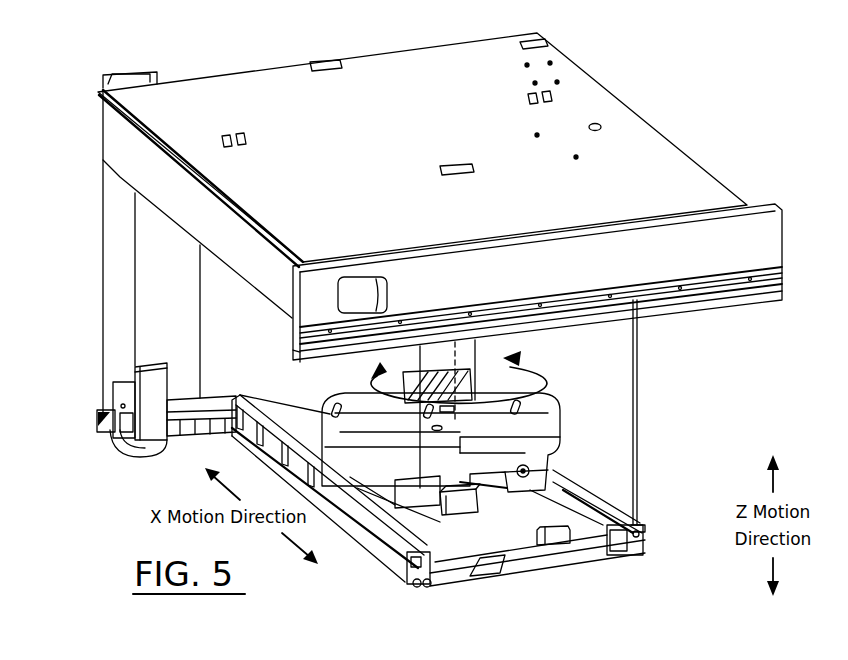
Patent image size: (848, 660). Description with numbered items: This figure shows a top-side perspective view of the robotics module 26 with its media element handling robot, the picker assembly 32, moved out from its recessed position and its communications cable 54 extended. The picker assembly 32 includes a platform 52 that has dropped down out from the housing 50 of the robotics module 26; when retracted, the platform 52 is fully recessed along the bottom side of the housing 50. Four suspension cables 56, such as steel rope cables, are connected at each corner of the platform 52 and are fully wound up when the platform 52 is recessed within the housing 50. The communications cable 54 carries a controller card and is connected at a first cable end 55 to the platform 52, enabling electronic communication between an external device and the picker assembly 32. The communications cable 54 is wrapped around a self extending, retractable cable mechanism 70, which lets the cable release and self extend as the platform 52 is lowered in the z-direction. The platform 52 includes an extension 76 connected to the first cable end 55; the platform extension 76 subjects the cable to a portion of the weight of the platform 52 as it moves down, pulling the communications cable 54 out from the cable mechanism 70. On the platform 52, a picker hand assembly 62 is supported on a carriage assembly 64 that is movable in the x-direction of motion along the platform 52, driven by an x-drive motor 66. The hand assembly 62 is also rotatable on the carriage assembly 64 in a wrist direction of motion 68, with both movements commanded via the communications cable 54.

The robotics module 26 is at (696, 95).
The picker assembly 32 is at (660, 476).
The housing 50 is at (568, 85).
The platform 52 is at (523, 560).
The communications cable 54 is at (362, 296).
The first cable end 55 is at (152, 364).
The suspension cables 56 is at (204, 304).
The picker hand assembly 62 is at (378, 460).
The carriage assembly 64 is at (460, 532).
The x-drive motor 66 is at (580, 535).
The wrist direction of motion 68 is at (540, 396).
The cable mechanism 70 is at (122, 158).
The platform extension 76 is at (100, 427).